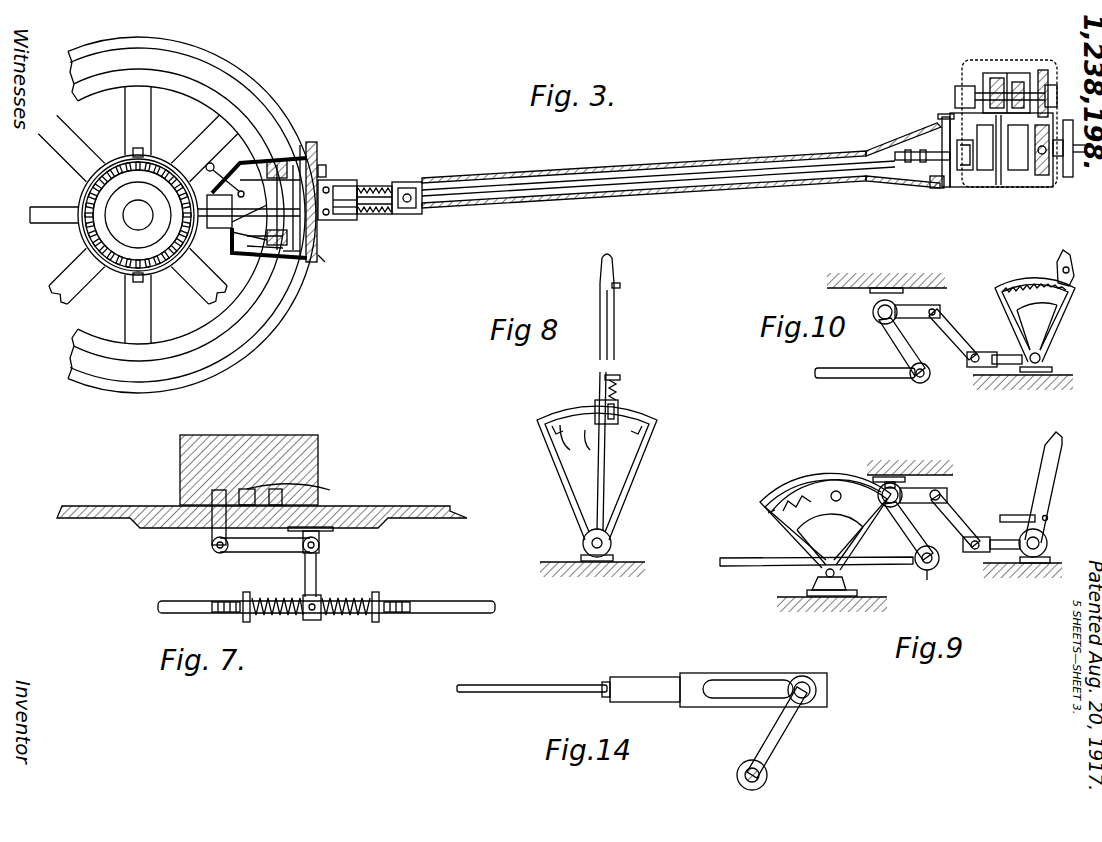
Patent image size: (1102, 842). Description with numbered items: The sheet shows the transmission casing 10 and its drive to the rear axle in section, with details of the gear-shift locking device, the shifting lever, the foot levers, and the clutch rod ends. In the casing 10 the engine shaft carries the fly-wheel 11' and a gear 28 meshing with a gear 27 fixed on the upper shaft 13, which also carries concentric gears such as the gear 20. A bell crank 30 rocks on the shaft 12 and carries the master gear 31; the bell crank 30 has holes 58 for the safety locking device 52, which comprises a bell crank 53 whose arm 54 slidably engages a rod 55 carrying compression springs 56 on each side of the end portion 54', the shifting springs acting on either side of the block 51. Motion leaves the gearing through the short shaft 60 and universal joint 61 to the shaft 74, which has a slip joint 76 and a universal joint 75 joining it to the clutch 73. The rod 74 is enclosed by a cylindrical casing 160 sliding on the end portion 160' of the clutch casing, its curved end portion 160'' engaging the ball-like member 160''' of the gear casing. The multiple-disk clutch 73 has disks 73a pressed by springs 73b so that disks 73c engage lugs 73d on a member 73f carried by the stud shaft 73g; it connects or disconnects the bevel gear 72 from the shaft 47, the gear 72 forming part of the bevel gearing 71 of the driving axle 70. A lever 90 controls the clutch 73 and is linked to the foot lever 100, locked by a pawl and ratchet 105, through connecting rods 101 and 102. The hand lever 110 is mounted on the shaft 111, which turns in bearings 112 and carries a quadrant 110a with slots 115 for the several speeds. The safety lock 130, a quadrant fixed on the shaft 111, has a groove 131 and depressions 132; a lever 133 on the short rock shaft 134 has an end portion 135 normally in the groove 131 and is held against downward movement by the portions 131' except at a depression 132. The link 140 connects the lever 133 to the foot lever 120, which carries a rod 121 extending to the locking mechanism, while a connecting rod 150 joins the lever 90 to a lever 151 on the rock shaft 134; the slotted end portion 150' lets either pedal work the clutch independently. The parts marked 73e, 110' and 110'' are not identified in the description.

In FIG. 3, the driving axle 70 is at (134, 218).
In FIG. 3, the bevel gearing 71 is at (157, 262).
In FIG. 3, the bevel gear 72 is at (216, 230).
In FIG. 3, the clutch 73 is at (314, 172).
In FIG. 3, the disks 73a is at (310, 150).
In FIG. 3, the springs 73b is at (255, 250).
In FIG. 3, the disks 73c is at (335, 185).
In FIG. 3, the lugs 73d is at (324, 165).
In FIG. 3, the housing member 73e is at (290, 258).
In FIG. 3, the member 73f is at (320, 262).
In FIG. 3, the stud shaft 73g is at (352, 195).
In FIG. 3, the shaft 47 is at (347, 210).
In FIG. 3, the lever 90 is at (238, 165).
In FIG. 14, the lever 90 is at (785, 739).
In FIG. 3, the end portion of clutch casing 160' is at (374, 218).
In FIG. 3, the universal joint 75 is at (405, 214).
In FIG. 3, the cylindrical casing 160 is at (644, 193).
In FIG. 3, the shaft 74 is at (664, 180).
In FIG. 3, the curved end portion 160'' is at (903, 153).
In FIG. 3, the ball like member 160''' is at (932, 137).
In FIG. 3, the slip joint 76 is at (908, 162).
In FIG. 3, the short shaft 60 is at (938, 182).
In FIG. 3, the casing 10 is at (1027, 60).
In FIG. 3, the concentric gear 20 is at (1000, 73).
In FIG. 3, the shaft 13 is at (962, 86).
In FIG. 3, the gear 27 is at (1047, 72).
In FIG. 3, the bell crank 30 is at (1054, 104).
In FIG. 7, the bell crank 30 is at (322, 451).
In FIG. 3, the fly-wheel 11' is at (1064, 177).
In FIG. 3, the holes 58 is at (998, 165).
In FIG. 7, the holes 58 is at (283, 493).
In FIG. 3, the universal joint 61 is at (968, 172).
In FIG. 3, the shaft 12 is at (986, 154).
In FIG. 3, the master gear 31 is at (1018, 154).
In FIG. 3, the gear 28 is at (1041, 176).
In FIG. 7, the safety locking device 52 is at (168, 583).
In FIG. 7, the block 51 is at (212, 530).
In FIG. 7, the bell crank 53 is at (266, 552).
In FIG. 7, the arm 54 is at (319, 562).
In FIG. 7, the end portion 54' is at (312, 625).
In FIG. 7, the rod 55 is at (396, 613).
In FIG. 7, the compression springs 56 is at (272, 615).
In FIG. 8, the hand lever 110 is at (636, 392).
In FIG. 8, the lever spring 110' is at (635, 389).
In FIG. 8, the lever latch 110'' is at (655, 411).
In FIG. 8, the quadrant 110a is at (560, 414).
In FIG. 8, the slots 115 is at (593, 440).
In FIG. 8, the shaft 111 is at (611, 543).
In FIG. 9, the shaft 111 is at (822, 577).
In FIG. 8, the bearings 112 is at (583, 546).
In FIG. 10, the rock shaft 134 is at (883, 322).
In FIG. 9, the rock shaft 134 is at (912, 510).
In FIG. 10, the connecting rod 101 is at (848, 378).
In FIG. 10, the connecting rod 102 is at (955, 332).
In FIG. 10, the foot lever 100 is at (1017, 313).
In FIG. 10, the pawl and ratchet 105 is at (1058, 272).
In FIG. 9, the safety lock 130 is at (775, 535).
In FIG. 9, the groove 131 is at (826, 480).
In FIG. 9, the depressions 132 is at (795, 498).
In FIG. 9, the portions 131' is at (743, 499).
In FIG. 9, the end portion 135 is at (838, 492).
In FIG. 9, the lever 151 is at (927, 571).
In FIG. 9, the connecting rod 150 is at (806, 576).
In FIG. 14, the connecting rod 150 is at (533, 702).
In FIG. 9, the lever 133 is at (942, 490).
In FIG. 9, the link 140 is at (975, 537).
In FIG. 9, the foot lever 120 is at (1048, 470).
In FIG. 9, the rod 121 is at (1016, 515).
In FIG. 14, the slotted end portion 150' is at (718, 676).